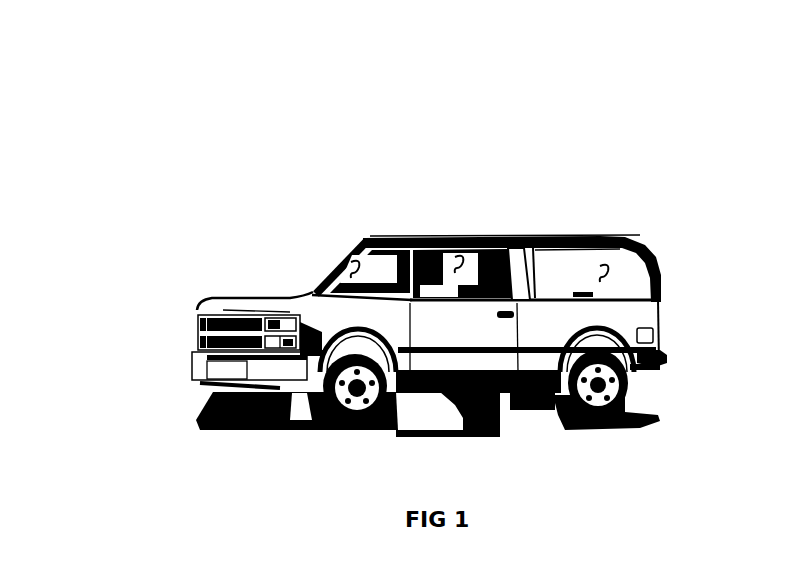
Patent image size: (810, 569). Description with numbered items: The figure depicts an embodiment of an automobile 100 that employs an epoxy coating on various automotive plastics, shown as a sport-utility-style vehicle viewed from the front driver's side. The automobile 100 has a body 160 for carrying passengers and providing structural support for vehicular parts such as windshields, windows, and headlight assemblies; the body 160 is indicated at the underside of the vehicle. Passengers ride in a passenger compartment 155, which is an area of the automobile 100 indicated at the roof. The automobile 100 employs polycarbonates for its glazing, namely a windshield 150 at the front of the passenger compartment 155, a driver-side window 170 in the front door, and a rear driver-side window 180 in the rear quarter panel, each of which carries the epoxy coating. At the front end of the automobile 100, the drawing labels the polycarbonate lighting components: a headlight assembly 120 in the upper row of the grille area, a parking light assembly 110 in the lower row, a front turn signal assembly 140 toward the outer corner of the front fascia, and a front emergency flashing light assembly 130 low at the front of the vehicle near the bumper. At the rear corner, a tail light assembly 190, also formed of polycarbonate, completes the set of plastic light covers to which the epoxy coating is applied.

The automobile 100 is at (128, 92).
The parking light assembly 110 is at (200, 338).
The headlight assembly 120 is at (200, 322).
The front emergency flashing light assembly 130 is at (217, 407).
The front turn signal assembly 140 is at (293, 320).
The windshield 150 is at (348, 258).
The passenger compartment 155 is at (440, 236).
The body 160 is at (440, 390).
The driver-side window 170 is at (473, 246).
The rear driver-side window 180 is at (617, 263).
The tail light assembly 190 is at (662, 325).